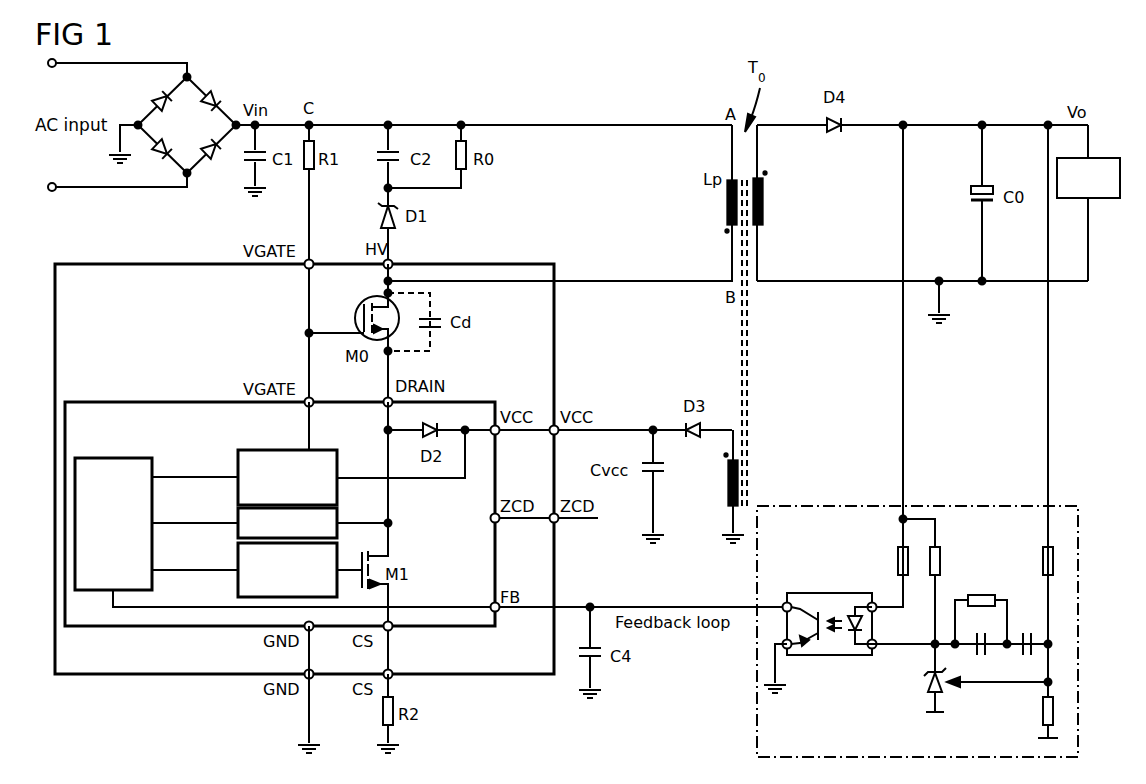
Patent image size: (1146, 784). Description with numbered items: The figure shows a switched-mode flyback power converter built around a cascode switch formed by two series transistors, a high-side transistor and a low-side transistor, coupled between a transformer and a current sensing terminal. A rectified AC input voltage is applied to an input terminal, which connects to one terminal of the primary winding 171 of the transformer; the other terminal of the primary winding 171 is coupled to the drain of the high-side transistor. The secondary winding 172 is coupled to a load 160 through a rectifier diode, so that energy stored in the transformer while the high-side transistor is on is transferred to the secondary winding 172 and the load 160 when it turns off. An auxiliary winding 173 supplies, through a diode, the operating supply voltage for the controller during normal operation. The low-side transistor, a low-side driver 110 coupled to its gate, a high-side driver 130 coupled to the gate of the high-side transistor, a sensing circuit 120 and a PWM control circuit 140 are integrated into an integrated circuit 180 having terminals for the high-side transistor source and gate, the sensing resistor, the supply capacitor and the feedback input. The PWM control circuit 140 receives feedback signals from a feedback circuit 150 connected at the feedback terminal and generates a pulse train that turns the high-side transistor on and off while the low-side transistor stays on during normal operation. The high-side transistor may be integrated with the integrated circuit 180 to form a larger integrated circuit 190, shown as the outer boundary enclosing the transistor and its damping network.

The low-side driver 110 is at (238, 560).
The sensing circuit 120 is at (238, 522).
The high-side driver 130 is at (238, 465).
The PWM control circuit 140 is at (115, 457).
The feedback circuit 150 is at (972, 505).
The load 160 is at (1103, 160).
The primary winding 171 is at (725, 200).
The secondary winding 172 is at (765, 200).
The auxiliary winding 173 is at (727, 490).
The integrated circuit 180 is at (172, 400).
The integrated circuit 190 is at (160, 262).